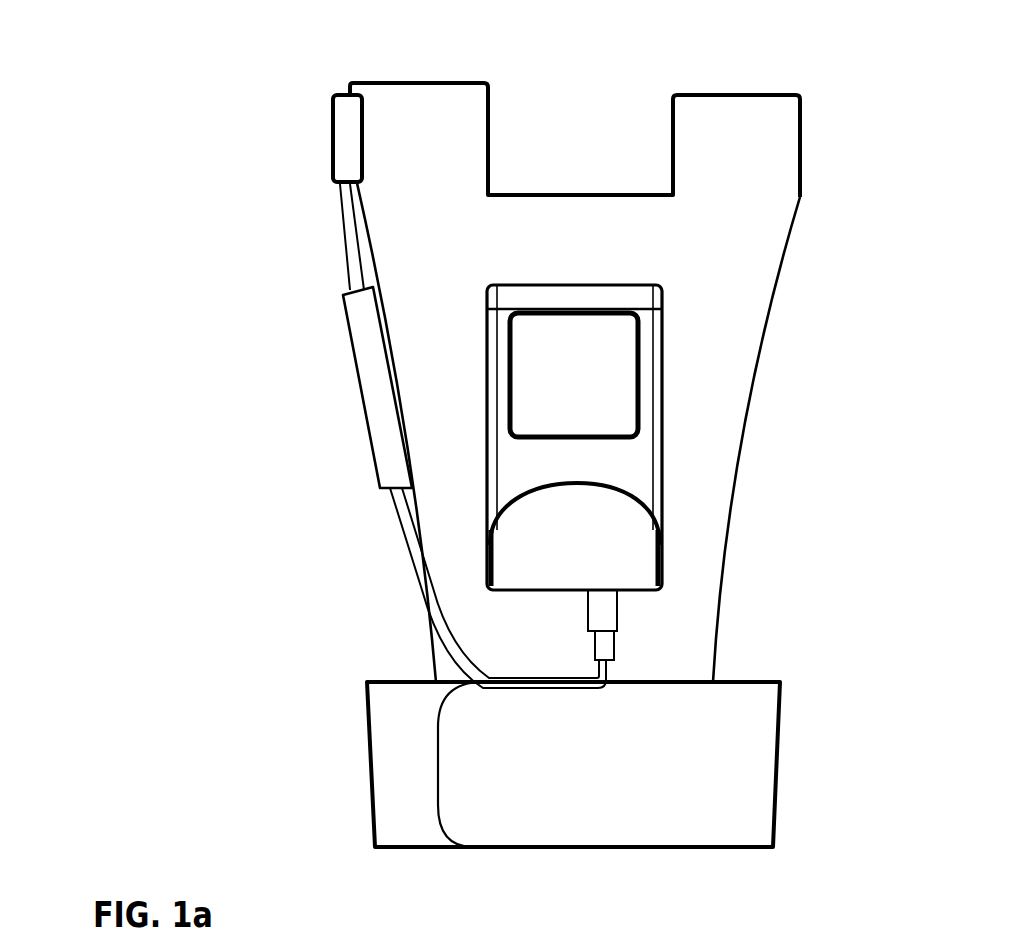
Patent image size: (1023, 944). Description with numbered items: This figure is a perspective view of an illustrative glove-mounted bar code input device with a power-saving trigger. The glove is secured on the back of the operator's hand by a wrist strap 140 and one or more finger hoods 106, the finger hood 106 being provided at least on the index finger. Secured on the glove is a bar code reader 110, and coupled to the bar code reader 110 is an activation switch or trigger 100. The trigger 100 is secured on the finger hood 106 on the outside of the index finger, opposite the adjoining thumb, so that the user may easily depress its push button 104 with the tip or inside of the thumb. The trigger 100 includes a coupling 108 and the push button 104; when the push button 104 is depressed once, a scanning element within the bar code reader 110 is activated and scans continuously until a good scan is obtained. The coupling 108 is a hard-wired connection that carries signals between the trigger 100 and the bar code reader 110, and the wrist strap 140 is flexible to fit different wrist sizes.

The trigger 100 is at (385, 407).
The push button 104 is at (333, 137).
The finger hood 106 is at (398, 76).
The coupling 108 is at (420, 617).
The bar code reader 110 is at (653, 450).
The wrist strap 140 is at (768, 762).